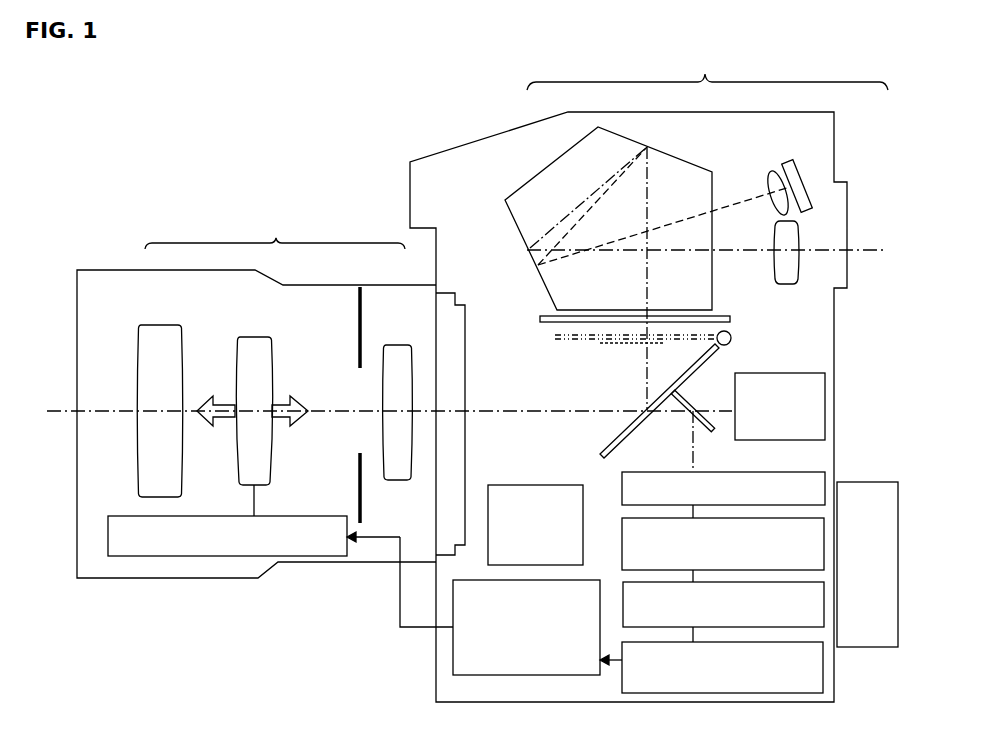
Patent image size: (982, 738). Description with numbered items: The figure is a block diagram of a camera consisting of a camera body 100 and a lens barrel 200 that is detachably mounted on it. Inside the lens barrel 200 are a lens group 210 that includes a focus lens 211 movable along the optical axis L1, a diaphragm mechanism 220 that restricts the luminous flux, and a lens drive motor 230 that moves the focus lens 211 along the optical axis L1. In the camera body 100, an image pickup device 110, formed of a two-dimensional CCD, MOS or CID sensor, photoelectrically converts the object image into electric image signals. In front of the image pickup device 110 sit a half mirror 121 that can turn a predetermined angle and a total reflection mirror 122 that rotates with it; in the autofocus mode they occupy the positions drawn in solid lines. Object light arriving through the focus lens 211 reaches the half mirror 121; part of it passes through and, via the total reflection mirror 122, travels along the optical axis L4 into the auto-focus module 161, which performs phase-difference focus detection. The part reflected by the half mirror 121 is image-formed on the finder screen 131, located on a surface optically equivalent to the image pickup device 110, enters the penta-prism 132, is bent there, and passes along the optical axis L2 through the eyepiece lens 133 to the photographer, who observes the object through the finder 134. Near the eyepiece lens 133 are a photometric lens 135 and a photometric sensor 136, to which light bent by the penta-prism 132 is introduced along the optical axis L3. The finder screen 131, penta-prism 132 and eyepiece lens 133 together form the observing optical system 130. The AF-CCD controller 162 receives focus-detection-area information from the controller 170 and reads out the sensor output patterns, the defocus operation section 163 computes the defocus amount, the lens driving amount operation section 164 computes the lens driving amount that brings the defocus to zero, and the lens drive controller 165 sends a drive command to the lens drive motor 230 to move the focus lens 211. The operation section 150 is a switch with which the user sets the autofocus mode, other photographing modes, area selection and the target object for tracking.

The camera body 100 is at (509, 127).
The image pickup device 110 is at (780, 382).
The half mirror 121 is at (623, 430).
The total reflection mirror 122 is at (680, 397).
The observing optical system 130 is at (676, 234).
The finder screen 131 is at (722, 318).
The penta-prism 132 is at (507, 200).
The eyepiece lens 133 is at (786, 258).
The finder 134 is at (843, 213).
The photometric lens 135 is at (770, 183).
The photometric sensor 136 is at (791, 160).
The operation section 150 is at (858, 481).
The auto-focus module 161 is at (723, 495).
The AF-CCD controller 162 is at (723, 550).
The defocus operation section 163 is at (723, 612).
The lens driving amount operation section 164 is at (711, 667).
The lens drive controller 165 is at (526, 627).
The controller 170 is at (535, 525).
The lens barrel 200 is at (110, 262).
The lens group 210 is at (274, 361).
The focus lens 211 is at (262, 350).
The diaphragm mechanism 220 is at (359, 340).
The lens drive motor 230 is at (280, 571).
The optical axis L1 is at (62, 410).
The optical axis L2 is at (856, 250).
The optical axis L3 is at (735, 203).
The optical axis L4 is at (700, 459).